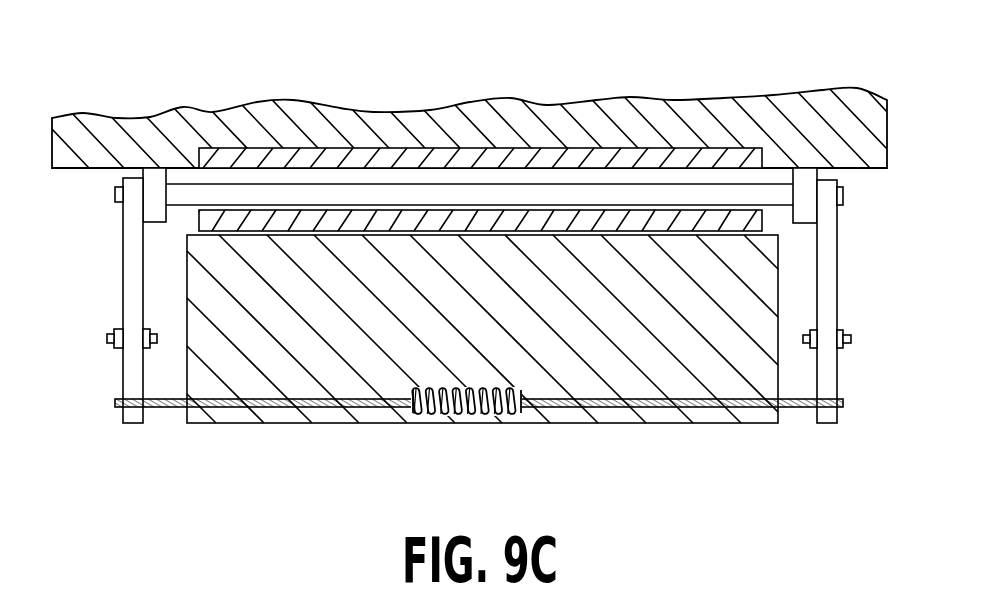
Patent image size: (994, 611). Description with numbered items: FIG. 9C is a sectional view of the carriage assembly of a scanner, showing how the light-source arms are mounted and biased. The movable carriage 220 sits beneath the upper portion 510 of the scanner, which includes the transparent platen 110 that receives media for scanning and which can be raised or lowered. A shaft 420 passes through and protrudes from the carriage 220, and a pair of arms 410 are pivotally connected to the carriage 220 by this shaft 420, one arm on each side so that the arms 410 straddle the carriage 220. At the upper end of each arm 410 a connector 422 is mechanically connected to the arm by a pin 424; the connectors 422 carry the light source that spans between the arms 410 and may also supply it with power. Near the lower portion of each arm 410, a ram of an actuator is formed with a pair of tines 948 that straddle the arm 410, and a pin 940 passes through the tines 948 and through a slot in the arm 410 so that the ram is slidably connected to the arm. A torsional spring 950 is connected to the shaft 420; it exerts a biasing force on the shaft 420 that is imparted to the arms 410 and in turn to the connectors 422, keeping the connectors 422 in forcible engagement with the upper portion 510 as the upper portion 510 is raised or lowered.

The platen 110 is at (333, 147).
The carriage 220 is at (647, 360).
The arms 410 is at (127, 257).
The shaft 420 is at (252, 403).
The connectors 422 is at (153, 175).
The pins 424 is at (113, 193).
The upper portion 510 is at (680, 120).
The pin 940 is at (107, 338).
The tines 948 is at (145, 328).
The torsional spring 950 is at (440, 417).